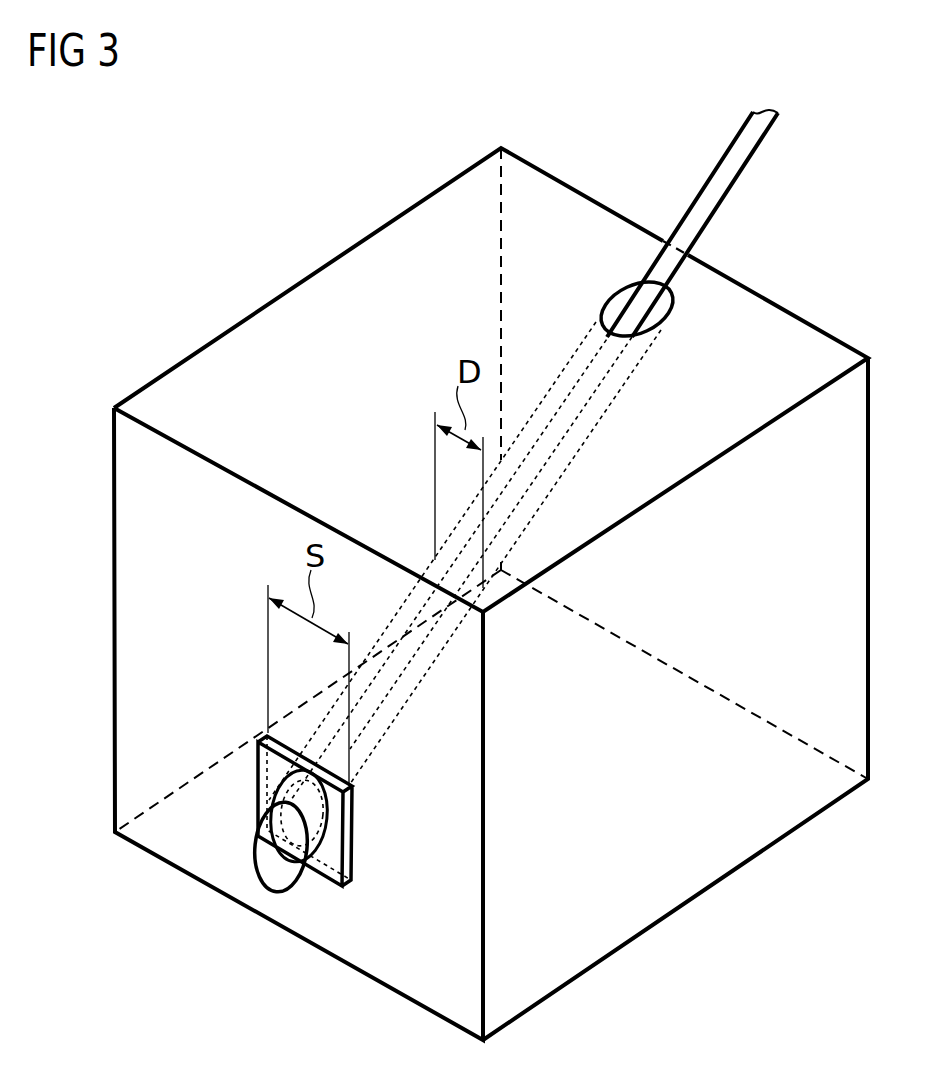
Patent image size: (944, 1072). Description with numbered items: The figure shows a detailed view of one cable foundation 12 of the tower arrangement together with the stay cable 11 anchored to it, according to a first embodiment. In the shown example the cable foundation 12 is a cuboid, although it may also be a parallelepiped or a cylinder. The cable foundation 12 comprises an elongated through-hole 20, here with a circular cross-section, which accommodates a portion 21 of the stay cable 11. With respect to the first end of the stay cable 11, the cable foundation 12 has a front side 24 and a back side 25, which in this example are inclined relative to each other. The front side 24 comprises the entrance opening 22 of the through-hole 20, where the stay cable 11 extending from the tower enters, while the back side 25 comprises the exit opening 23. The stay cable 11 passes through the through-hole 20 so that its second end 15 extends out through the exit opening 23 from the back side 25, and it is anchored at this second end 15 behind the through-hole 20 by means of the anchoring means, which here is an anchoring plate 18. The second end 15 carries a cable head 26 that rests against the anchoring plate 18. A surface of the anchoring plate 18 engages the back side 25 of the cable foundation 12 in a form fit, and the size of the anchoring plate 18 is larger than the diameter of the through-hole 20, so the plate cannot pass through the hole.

The stay cable 11 is at (479, 537).
The cable foundation 12 is at (459, 594).
The second end 15 is at (230, 882).
The anchoring plate 18 is at (340, 819).
The through-hole 20 is at (608, 398).
The portion of the stay cable 21 is at (590, 350).
The entrance opening 22 is at (673, 300).
The exit opening 23 is at (328, 808).
The front side 24 is at (428, 238).
The back side 25 is at (138, 567).
The cable head 26 is at (267, 867).